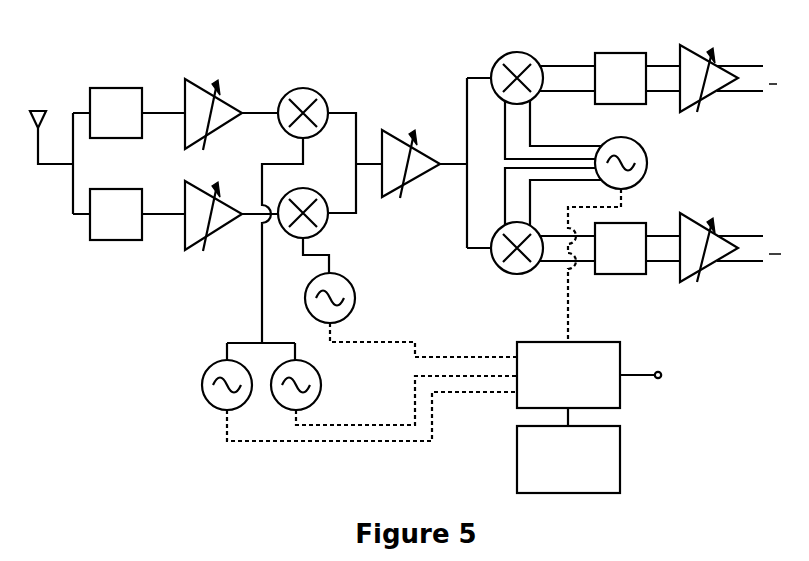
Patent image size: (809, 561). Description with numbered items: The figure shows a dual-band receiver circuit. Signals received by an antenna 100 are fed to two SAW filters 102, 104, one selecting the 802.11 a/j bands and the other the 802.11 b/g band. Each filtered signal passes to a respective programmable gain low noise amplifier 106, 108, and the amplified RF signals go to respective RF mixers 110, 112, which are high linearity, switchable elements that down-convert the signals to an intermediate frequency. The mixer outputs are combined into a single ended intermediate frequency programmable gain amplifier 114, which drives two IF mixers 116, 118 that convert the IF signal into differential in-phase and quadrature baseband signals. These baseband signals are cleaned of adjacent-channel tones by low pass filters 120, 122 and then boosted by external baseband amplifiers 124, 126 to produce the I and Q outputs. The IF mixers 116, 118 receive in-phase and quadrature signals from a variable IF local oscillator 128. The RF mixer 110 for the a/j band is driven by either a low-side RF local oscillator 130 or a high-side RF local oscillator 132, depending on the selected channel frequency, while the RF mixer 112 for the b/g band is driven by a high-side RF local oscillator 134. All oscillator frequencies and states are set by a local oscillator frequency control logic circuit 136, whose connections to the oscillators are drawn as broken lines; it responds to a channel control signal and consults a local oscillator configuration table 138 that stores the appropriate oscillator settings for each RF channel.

The antenna 100 is at (37, 110).
The SAW filter 102 is at (125, 88).
The SAW filter 104 is at (89, 235).
The programmable gain low noise amplifier 106 is at (191, 87).
The programmable gain low noise amplifier 108 is at (189, 252).
The RF mixer 110 is at (305, 87).
The RF mixer 112 is at (328, 226).
The intermediate frequency programmable gain amplifier 114 is at (395, 134).
The IF mixer 116 is at (520, 53).
The IF mixer 118 is at (519, 275).
The low pass filter 120 is at (628, 53).
The low pass filter 122 is at (633, 274).
The baseband amplifier 124 is at (692, 50).
The baseband amplifier 126 is at (698, 221).
The variable IF local oscillator 128 is at (649, 160).
The low-side RF local oscillator 130 is at (208, 406).
The high-side RF local oscillator 132 is at (278, 406).
The high-side RF local oscillator 134 is at (306, 303).
The local oscillator frequency control logic circuit 136 is at (622, 394).
The local oscillator configuration table 138 is at (622, 477).